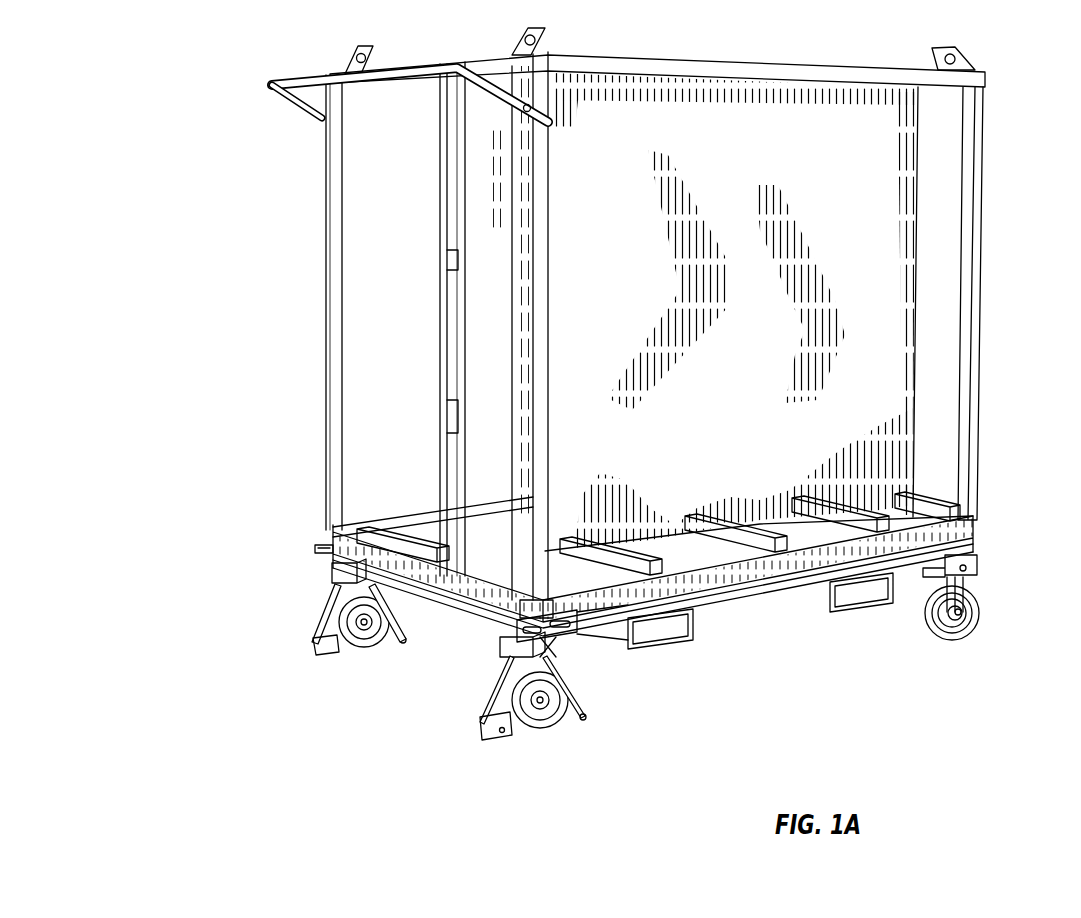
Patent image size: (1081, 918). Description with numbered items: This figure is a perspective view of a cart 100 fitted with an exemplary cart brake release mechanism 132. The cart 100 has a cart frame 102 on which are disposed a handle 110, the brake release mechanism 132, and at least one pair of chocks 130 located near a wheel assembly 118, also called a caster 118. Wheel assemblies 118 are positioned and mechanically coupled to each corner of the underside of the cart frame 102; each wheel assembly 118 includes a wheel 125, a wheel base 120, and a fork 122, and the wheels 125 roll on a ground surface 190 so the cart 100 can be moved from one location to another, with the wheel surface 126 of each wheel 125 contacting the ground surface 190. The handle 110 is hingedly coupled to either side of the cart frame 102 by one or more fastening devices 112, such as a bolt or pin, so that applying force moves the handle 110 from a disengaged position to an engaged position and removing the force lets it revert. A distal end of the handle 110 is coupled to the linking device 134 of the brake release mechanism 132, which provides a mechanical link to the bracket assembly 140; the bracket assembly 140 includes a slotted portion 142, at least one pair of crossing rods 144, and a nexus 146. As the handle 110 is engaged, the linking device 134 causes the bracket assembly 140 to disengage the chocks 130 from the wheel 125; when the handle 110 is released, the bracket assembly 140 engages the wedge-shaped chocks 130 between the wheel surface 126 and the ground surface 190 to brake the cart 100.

The cart 100 is at (158, 60).
The cart frame 102 is at (968, 538).
The handle 110 is at (290, 74).
The fastening device 112 is at (520, 107).
The wheel assembly 118 is at (956, 614).
The wheel base 120 is at (358, 572).
The fork 122 is at (355, 607).
The wheel 125 is at (937, 638).
The wheel surface 126 is at (923, 614).
The chock 130 is at (512, 741).
The brake release mechanism 132 is at (577, 459).
The linking device 134 is at (553, 226).
The bracket assembly 140 is at (538, 706).
The slotted portion 142 is at (577, 634).
The crossing rods 144 is at (502, 717).
The nexus 146 is at (398, 590).
The ground surface 190 is at (392, 725).